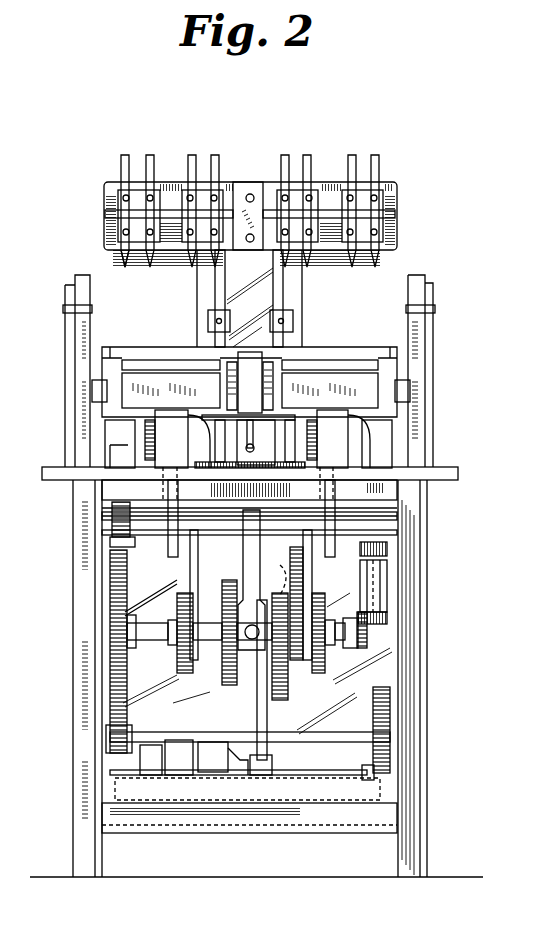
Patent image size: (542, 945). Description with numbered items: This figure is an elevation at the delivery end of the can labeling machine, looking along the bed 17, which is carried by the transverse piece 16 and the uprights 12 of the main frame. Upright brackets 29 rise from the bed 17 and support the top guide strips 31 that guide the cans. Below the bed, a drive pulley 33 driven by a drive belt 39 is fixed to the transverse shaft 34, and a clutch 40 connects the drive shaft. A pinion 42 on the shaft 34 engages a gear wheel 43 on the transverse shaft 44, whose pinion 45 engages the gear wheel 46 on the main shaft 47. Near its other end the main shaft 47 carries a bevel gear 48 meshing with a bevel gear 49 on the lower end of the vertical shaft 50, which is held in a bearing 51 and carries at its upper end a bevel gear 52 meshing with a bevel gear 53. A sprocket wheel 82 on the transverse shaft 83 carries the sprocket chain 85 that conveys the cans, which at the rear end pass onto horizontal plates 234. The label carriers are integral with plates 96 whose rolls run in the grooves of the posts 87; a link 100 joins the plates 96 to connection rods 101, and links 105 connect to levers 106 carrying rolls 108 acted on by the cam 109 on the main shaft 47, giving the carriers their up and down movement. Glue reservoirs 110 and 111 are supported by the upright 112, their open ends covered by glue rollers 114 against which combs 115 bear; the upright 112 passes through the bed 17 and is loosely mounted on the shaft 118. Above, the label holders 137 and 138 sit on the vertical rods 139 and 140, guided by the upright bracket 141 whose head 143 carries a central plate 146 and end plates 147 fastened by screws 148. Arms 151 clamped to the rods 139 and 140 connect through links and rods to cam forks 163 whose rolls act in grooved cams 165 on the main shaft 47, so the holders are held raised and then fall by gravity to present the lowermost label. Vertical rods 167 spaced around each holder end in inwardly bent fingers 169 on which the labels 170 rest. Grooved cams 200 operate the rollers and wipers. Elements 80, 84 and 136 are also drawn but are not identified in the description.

The upright 12 is at (73, 594).
The transverse piece 16 is at (93, 491).
The bed 17 is at (455, 467).
The upright brackets 29 is at (362, 456).
The top guide strips 31 is at (327, 439).
The drive pulley 33 is at (147, 745).
The transverse shaft 34 is at (295, 771).
The drive belt 39 is at (172, 742).
The clutch 40 is at (200, 742).
The pinion 42 is at (368, 769).
The gear wheel 43 is at (390, 703).
The transverse shaft 44 is at (320, 737).
The pinion 45 is at (108, 739).
The gear wheel 46 is at (112, 678).
The main shaft 47 is at (153, 636).
The bevel gear 48 is at (358, 645).
The bevel gear 49 is at (390, 619).
The vertical shaft 50 is at (372, 592).
The bearing 51 is at (388, 575).
The bevel gear 52 is at (390, 550).
The bevel gear 53 is at (360, 545).
The gear 80 is at (112, 520).
The sprocket wheel 82 is at (173, 557).
The transverse shaft 83 is at (139, 513).
The bracket 84 is at (118, 543).
The sprocket chain 85 is at (178, 567).
The posts 87 is at (65, 340).
The plates 96 is at (92, 386).
The link 100 is at (108, 426).
The connection rods 101 is at (110, 458).
The links 105 is at (262, 703).
The levers 106 is at (270, 656).
The roll 108 is at (281, 580).
The cam 109 is at (288, 690).
The glue reservoir 110 is at (150, 377).
The glue reservoir 111 is at (326, 377).
The upright 112 is at (243, 556).
The glue rollers 114 is at (176, 368).
The combs 115 is at (352, 362).
The shaft 118 is at (150, 531).
The gear 136 is at (222, 672).
The label holder 137 is at (118, 202).
The label holder 138 is at (393, 212).
The vertical rod 139 is at (215, 299).
The vertical rod 140 is at (283, 297).
The upright bracket 141 is at (302, 284).
The head 143 is at (322, 190).
The plate 146 is at (253, 183).
The plates 147 is at (395, 183).
The screws 148 is at (248, 194).
The arms 151 is at (296, 323).
The cam forks 163 is at (196, 573).
The grooved cams 165 is at (177, 605).
The vertical rods 167 is at (190, 156).
The fingers 169 is at (125, 268).
The labels 170 is at (175, 266).
The grooved cams 200 is at (210, 503).
The horizontal plates 234 is at (170, 462).